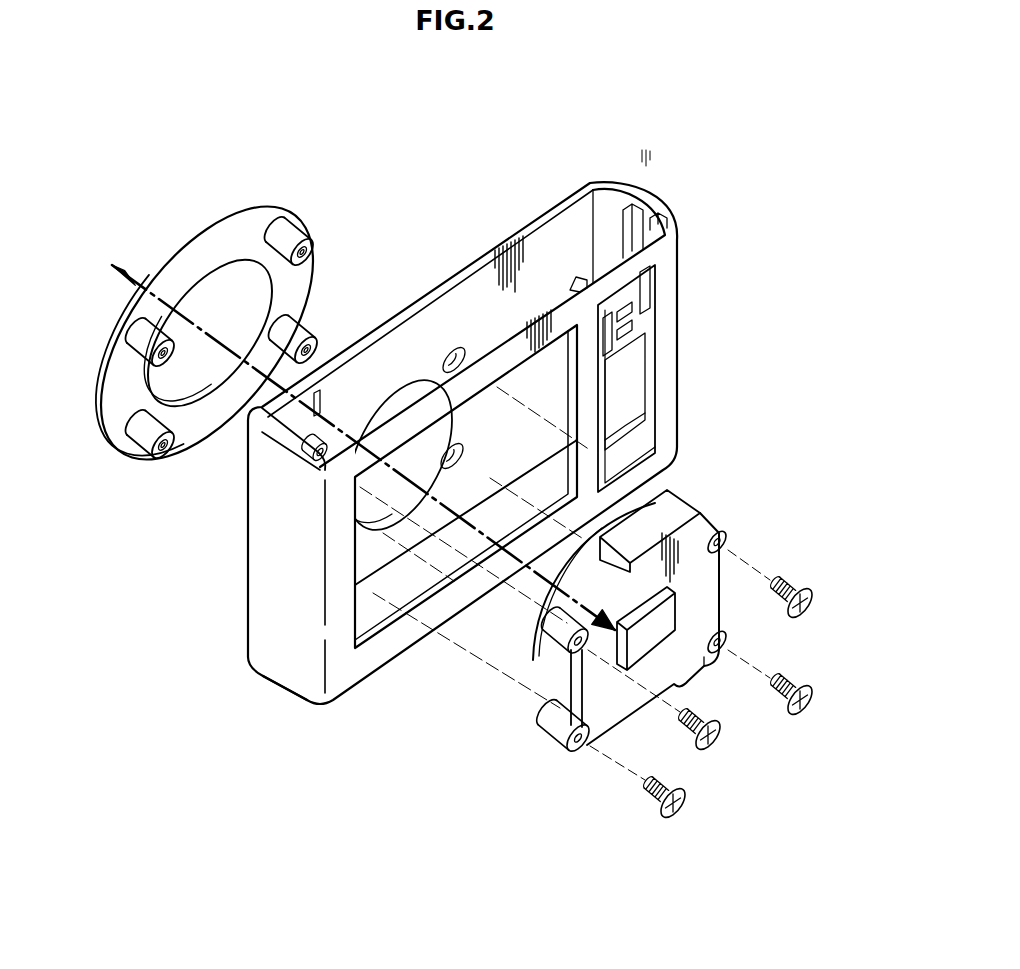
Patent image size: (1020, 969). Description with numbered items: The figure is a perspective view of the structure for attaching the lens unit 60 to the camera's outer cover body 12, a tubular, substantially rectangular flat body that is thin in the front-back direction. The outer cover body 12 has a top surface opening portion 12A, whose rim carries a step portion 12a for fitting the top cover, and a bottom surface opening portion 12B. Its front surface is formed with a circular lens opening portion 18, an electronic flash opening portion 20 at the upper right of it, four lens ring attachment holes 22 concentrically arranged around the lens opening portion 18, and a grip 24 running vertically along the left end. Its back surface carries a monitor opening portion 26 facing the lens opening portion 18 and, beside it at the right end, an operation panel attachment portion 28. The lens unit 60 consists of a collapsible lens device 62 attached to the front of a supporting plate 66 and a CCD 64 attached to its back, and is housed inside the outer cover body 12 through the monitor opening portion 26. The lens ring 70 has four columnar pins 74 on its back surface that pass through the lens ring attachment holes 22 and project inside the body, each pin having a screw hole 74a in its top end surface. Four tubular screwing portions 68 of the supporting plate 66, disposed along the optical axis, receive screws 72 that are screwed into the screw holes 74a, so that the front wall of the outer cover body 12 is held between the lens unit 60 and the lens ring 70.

The outer cover body 12 is at (248, 626).
The top surface opening portion 12A is at (533, 253).
The bottom surface opening portion 12B is at (283, 690).
The step portion 12a is at (612, 182).
The lens opening portion 18 is at (393, 380).
The electronic flash opening portion 20 is at (300, 458).
The lens ring attachment holes 22 is at (453, 350).
The grip 24 is at (553, 200).
The monitor opening portion 26 is at (380, 642).
The operation panel attachment portion 28 is at (640, 333).
The lens unit 60 is at (734, 470).
The lens device 62 is at (528, 668).
The CCD 64 is at (640, 632).
The supporting plate 66 is at (700, 595).
The screwing portions 68 is at (550, 633).
The lens ring 70 is at (178, 285).
The screws 72 is at (814, 594).
The columnar pins 74 is at (285, 237).
The screw holes 74a is at (303, 255).